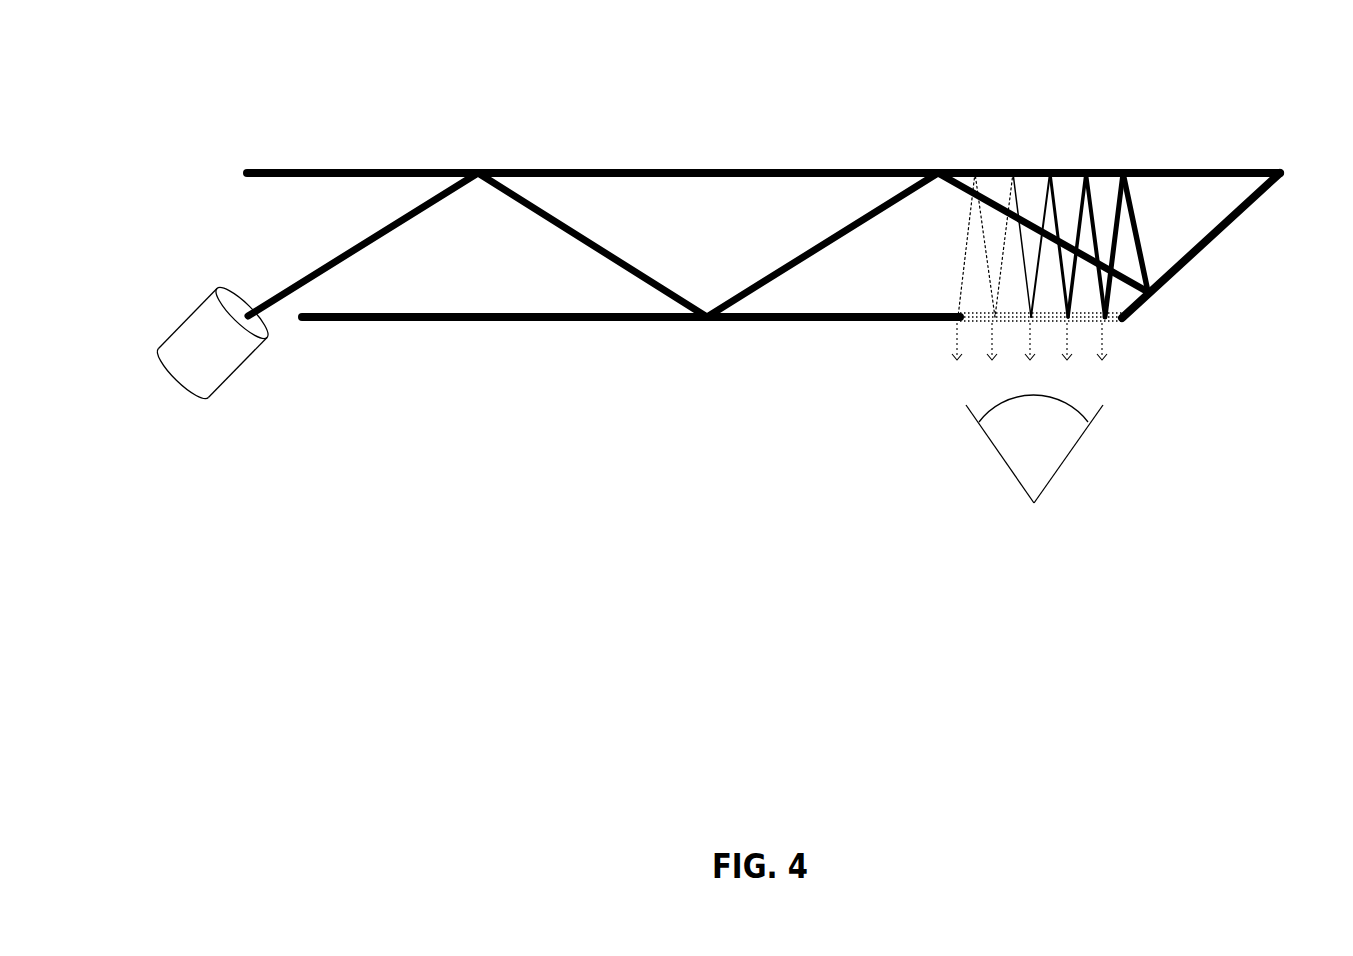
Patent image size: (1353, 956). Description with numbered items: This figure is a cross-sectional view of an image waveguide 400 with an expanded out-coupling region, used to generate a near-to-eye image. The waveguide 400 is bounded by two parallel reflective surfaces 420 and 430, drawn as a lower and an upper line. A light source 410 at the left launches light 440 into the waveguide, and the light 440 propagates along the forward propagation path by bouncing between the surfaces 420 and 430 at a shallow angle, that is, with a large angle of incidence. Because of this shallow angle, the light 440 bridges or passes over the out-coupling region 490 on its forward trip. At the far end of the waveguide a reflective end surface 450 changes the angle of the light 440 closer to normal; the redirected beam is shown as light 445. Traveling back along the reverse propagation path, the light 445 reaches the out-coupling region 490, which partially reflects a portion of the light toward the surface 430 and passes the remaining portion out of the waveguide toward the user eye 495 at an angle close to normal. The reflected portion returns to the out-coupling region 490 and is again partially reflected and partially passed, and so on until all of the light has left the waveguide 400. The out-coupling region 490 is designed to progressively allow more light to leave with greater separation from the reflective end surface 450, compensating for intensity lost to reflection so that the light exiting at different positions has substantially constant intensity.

The waveguide 400 is at (581, 526).
The light source 410 is at (205, 363).
The reflective surface 420 is at (770, 321).
The reflective surface 430 is at (768, 169).
The light 440 is at (407, 213).
The light 445 is at (1117, 215).
The reflective end surface 450 is at (1190, 247).
The out-coupling region 490 is at (960, 320).
The user eye 495 is at (1052, 465).